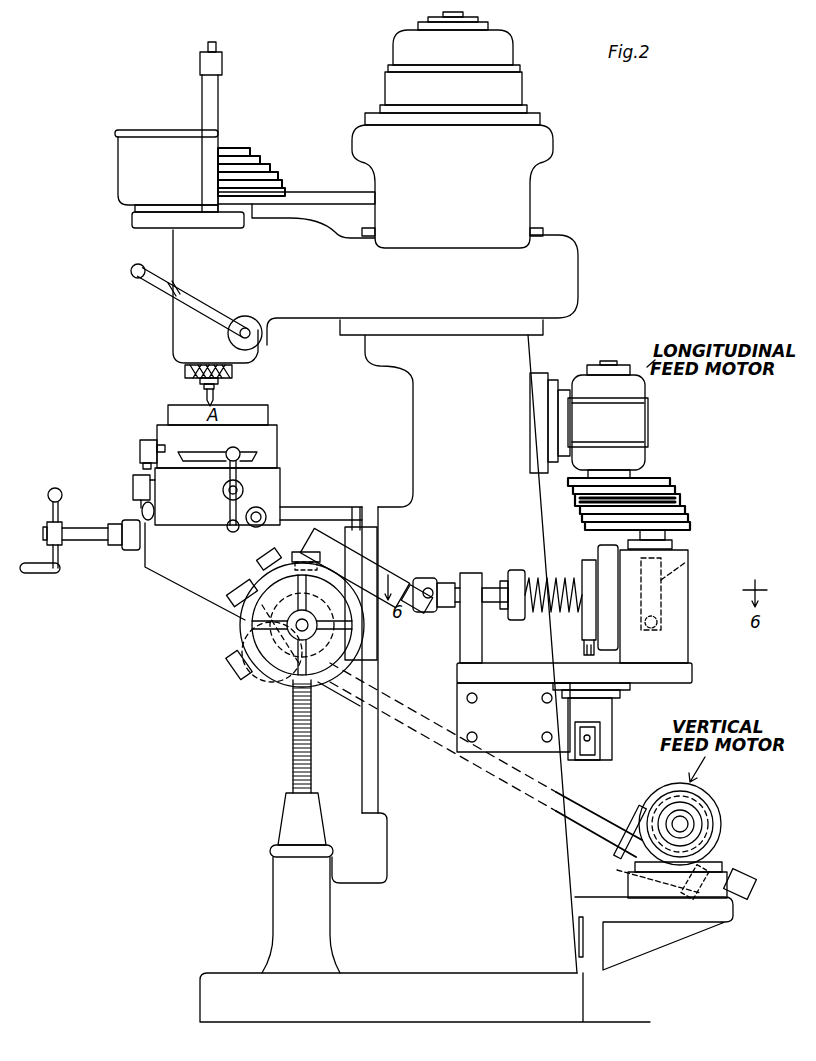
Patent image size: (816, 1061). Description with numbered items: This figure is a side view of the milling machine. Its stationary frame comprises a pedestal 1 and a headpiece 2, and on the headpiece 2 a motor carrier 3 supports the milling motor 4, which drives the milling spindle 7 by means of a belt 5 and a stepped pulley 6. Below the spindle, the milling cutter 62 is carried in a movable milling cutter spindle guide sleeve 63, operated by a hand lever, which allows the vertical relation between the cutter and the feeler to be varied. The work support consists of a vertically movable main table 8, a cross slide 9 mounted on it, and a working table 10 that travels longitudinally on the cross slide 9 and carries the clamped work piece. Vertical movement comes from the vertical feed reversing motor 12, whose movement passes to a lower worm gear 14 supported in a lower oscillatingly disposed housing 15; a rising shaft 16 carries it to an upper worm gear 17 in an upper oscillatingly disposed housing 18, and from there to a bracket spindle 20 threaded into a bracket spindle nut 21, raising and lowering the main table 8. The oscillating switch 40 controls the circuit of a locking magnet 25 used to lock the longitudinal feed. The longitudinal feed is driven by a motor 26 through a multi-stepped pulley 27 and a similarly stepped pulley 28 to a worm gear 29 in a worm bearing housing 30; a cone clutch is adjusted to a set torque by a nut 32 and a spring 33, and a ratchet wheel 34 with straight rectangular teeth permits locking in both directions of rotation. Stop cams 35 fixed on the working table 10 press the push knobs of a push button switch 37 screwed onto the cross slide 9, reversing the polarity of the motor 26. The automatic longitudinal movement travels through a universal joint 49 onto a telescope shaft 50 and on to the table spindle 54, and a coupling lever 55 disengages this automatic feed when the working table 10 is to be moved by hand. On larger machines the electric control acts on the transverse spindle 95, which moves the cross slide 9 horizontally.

The pedestal 1 is at (445, 1015).
The headpiece 2 is at (555, 272).
The motor carrier 3 is at (512, 192).
The milling motor 4 is at (503, 50).
The belt 5 is at (318, 192).
The stepped pulley 6 is at (246, 148).
The milling spindle 7 is at (215, 90).
The main table 8 is at (175, 572).
The cross slide 9 is at (270, 482).
The working table 10 is at (265, 435).
The vertical feed reversing motor 12 is at (722, 815).
The lower worm gear 14 is at (627, 867).
The lower oscillatingly disposed housing 15 is at (617, 848).
The rising shaft 16 is at (600, 808).
The upper worm gear 17 is at (268, 685).
The upper oscillatingly disposed housing 18 is at (232, 672).
The bracket spindle 20 is at (292, 755).
The bracket spindle nut 21 is at (288, 818).
The locking magnet 25 is at (600, 712).
The longitudinal feed motor 26 is at (632, 412).
The multi-stepped pulley 27 is at (590, 500).
The stepped pulley 28 is at (682, 518).
The worm gear 29 is at (684, 572).
The worm bearing housing 30 is at (688, 650).
The nut 32 is at (515, 570).
The spring 33 is at (540, 608).
The ratchet wheel 34 is at (586, 565).
The stop cams 35 is at (140, 447).
The push button switch 37 is at (133, 483).
The oscillating switch 40 is at (256, 567).
The universal joint 49 is at (445, 607).
The telescope shaft 50 is at (385, 575).
The table spindle 54 is at (223, 490).
The coupling lever 55 is at (142, 508).
The milling cutter 62 is at (206, 394).
The milling cutter spindle guide sleeve 63 is at (232, 372).
The transverse spindle 95 is at (82, 538).